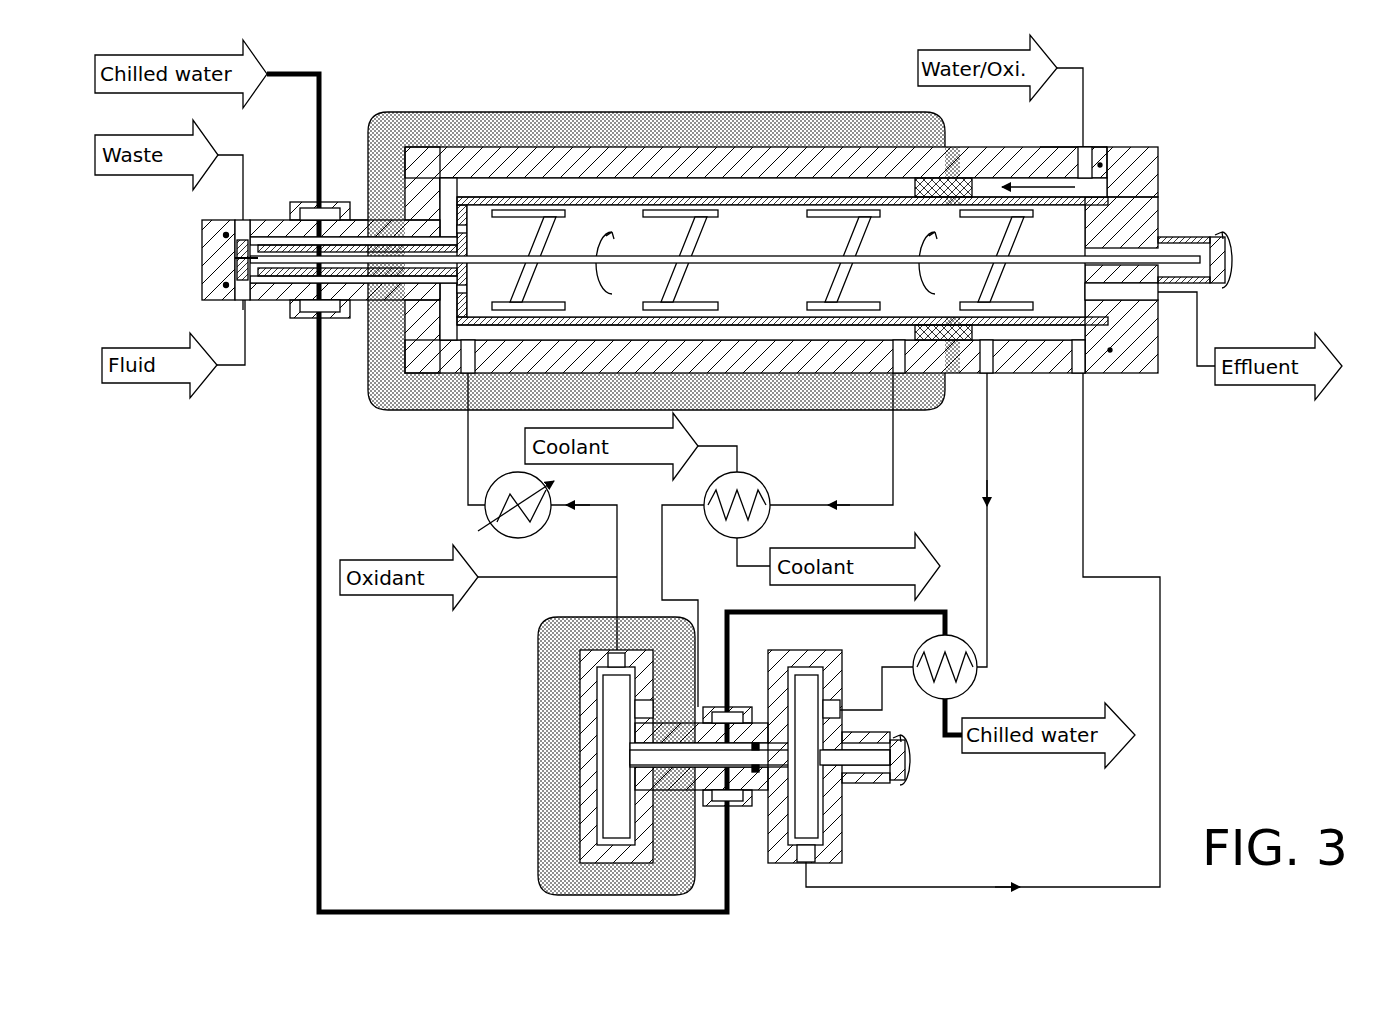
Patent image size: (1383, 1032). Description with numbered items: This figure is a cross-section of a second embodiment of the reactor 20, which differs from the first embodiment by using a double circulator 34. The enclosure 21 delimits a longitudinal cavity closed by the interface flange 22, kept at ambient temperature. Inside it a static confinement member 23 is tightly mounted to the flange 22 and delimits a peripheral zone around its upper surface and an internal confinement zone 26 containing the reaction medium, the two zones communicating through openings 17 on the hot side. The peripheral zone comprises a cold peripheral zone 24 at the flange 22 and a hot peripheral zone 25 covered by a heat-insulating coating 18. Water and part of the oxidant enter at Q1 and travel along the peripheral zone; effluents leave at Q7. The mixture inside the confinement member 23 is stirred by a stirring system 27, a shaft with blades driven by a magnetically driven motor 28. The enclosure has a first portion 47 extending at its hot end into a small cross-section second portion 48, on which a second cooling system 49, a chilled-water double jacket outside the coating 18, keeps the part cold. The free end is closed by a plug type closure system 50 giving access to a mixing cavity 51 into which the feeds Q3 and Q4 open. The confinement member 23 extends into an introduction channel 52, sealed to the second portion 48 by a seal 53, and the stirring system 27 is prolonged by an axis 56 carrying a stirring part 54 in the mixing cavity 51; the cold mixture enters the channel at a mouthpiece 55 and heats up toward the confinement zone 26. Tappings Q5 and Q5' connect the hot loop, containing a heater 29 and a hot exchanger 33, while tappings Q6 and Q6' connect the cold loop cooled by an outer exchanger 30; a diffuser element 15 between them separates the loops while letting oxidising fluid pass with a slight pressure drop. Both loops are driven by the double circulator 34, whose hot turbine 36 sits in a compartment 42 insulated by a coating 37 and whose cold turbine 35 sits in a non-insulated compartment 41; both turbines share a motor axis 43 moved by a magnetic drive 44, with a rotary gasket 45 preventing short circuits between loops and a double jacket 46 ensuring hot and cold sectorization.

The diffuser element 15 is at (988, 141).
The opening 17 is at (468, 210).
The heat-insulating coating 18 is at (545, 125).
The reactor 20 is at (1270, 70).
The enclosure 21 is at (930, 185).
The interface flange 22 is at (1148, 183).
The confinement member 23 is at (748, 230).
The cold peripheral zone 24 is at (1048, 332).
The hot peripheral zone 25 is at (790, 332).
The confinement zone 26 is at (765, 188).
The stirring system 27 is at (636, 255).
The magnetically driven motor 28 is at (1214, 232).
The heater 29 is at (485, 510).
The outer exchanger 30 is at (948, 636).
The hot exchanger 33 is at (720, 532).
The double circulator 34 is at (448, 716).
The cold turbine 35 is at (805, 810).
The hot turbine 36 is at (615, 806).
The coating 37 is at (558, 668).
The compartment 41 is at (845, 858).
The compartment 42 is at (588, 712).
The motor axis 43 is at (640, 755).
The magnetic drive 44 is at (898, 772).
The rotary gasket 45 is at (755, 707).
The double jacket 46 is at (742, 806).
The first portion 47 is at (1063, 147).
The second portion 48 is at (330, 220).
The second cooling system 49 is at (302, 318).
The plug type closure system 50 is at (203, 240).
The mixing cavity 51 is at (262, 235).
The introduction channel 52 is at (352, 284).
The seal 53 is at (270, 300).
The stirring part 54 is at (243, 258).
The mouthpiece 55 is at (226, 286).
The axis 56 is at (352, 222).
The water introduction connection Q1 is at (1088, 145).
The waste feed connection Q3 is at (243, 228).
The fluid feed connection Q4 is at (252, 302).
The hot loop tapping Q5 is at (437, 396).
The hot loop tapping Q5' is at (865, 396).
The cold loop tapping Q6 is at (1101, 392).
The cold loop tapping Q6' is at (1014, 392).
The effluent discharge Q7 is at (1160, 300).